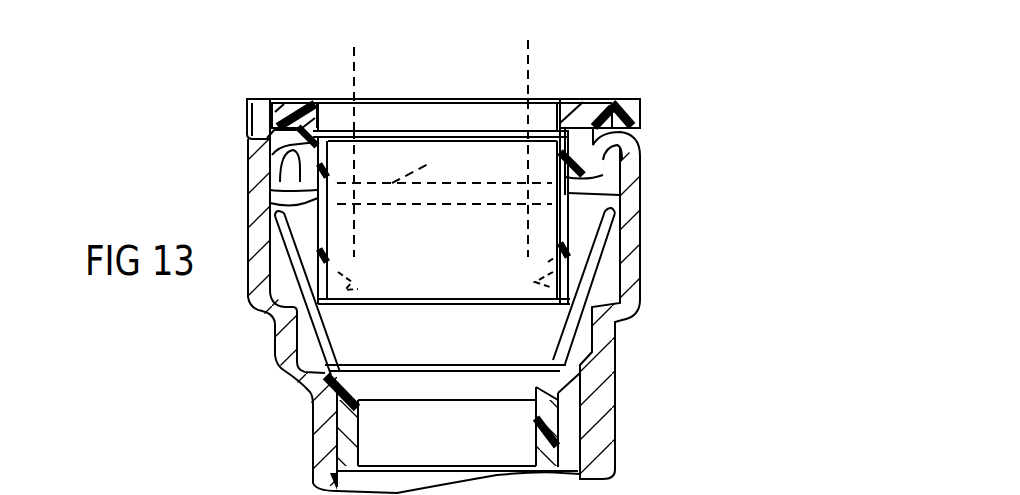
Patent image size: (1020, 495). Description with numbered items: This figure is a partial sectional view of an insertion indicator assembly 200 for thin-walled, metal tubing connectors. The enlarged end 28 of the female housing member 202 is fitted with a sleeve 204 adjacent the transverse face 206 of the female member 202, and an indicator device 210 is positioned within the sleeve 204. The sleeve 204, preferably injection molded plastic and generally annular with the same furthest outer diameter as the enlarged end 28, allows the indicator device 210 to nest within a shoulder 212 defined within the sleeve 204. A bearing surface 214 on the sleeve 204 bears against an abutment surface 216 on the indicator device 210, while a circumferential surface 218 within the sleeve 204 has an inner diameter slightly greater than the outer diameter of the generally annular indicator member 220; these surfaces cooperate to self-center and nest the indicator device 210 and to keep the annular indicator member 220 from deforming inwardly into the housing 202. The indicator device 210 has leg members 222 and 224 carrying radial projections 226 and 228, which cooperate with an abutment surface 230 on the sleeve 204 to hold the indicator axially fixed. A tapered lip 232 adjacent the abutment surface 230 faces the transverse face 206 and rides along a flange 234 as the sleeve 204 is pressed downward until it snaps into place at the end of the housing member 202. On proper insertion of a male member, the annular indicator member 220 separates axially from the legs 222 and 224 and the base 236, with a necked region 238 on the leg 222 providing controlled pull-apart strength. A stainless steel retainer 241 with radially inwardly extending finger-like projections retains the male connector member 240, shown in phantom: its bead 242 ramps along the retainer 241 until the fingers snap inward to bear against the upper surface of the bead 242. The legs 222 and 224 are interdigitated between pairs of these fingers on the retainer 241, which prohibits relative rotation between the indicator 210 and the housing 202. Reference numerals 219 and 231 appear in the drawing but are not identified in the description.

The enlarged end 28 is at (678, 275).
The insertion indicator assembly 200 is at (712, 84).
The female housing member 202 is at (582, 400).
The sleeve 204 is at (641, 106).
The transverse face 206 is at (622, 137).
The indicator device 210 is at (608, 72).
The shoulder 212 is at (233, 121).
The bearing surface 214 is at (323, 128).
The abutment surface 216 is at (275, 128).
The circumferential surface 218 is at (610, 97).
The lip wall 219 is at (265, 100).
The generally annular indicator member 220 is at (550, 100).
The leg member 222 is at (337, 220).
The leg member 224 is at (555, 218).
The radial projection 226 is at (280, 205).
The radial projection 228 is at (620, 193).
The abutment surface 230 is at (280, 183).
The sleeve wall 231 is at (556, 139).
The tapered lip 232 is at (280, 188).
The flange 234 is at (263, 142).
The base 236 is at (420, 303).
The necked region 238 is at (347, 138).
The male connector member 240 is at (354, 62).
The retainer 241 is at (268, 297).
The bead 242 is at (437, 168).